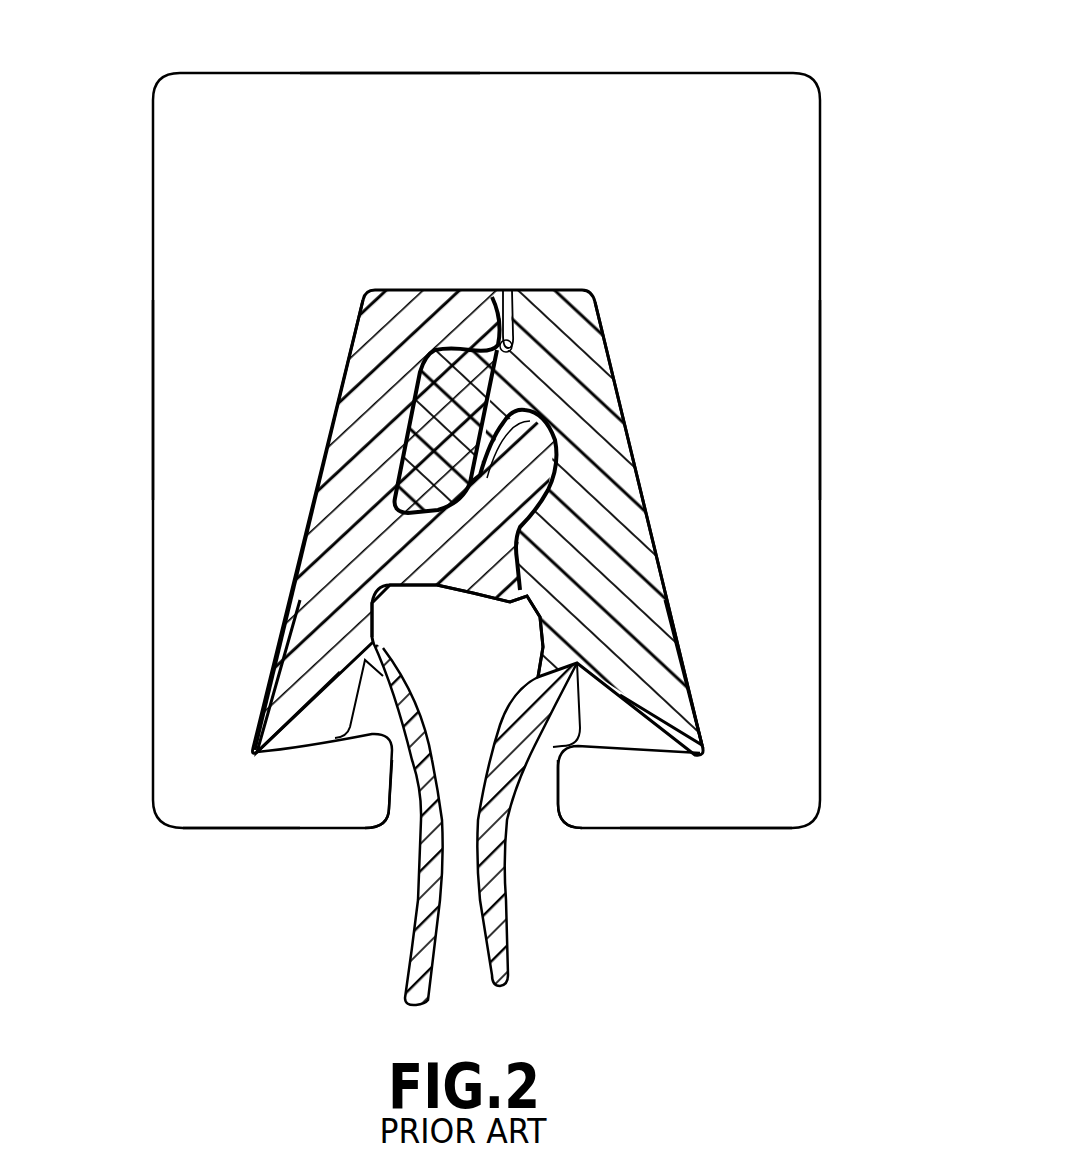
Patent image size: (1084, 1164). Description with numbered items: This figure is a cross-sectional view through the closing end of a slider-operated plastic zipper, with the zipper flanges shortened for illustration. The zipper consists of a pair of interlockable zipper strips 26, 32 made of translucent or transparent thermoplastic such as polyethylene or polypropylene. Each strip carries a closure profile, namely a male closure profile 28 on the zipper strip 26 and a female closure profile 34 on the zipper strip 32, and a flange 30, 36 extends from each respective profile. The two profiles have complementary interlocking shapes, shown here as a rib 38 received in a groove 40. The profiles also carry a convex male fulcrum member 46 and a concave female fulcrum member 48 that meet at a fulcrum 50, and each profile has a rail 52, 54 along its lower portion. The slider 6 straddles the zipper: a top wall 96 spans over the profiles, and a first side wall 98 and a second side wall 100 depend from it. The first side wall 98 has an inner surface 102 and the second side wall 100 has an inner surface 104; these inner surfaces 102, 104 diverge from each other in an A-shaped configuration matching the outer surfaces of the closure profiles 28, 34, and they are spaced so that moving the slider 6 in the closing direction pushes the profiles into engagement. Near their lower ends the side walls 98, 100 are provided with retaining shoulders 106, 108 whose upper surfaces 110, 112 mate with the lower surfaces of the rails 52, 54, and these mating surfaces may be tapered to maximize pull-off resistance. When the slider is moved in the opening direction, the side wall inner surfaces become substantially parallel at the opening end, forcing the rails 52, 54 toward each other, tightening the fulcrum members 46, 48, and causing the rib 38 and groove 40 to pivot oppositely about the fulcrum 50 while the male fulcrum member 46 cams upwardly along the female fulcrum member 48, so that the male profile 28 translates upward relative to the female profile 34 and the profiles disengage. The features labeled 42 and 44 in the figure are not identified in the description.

The slider 6 is at (737, 72).
The zipper strip 26 is at (618, 395).
The closure profile 28 is at (610, 420).
The flange 30 is at (503, 955).
The zipper strip 32 is at (325, 453).
The closure profile 34 is at (362, 395).
The flange 36 is at (414, 950).
The rib 38 is at (445, 397).
The groove 40 is at (385, 500).
The slot 42 is at (490, 297).
The slot end 44 is at (512, 343).
The convex male fulcrum member 46 is at (525, 525).
The concave female fulcrum member 48 is at (480, 572).
The fulcrum 50 is at (516, 590).
The rail 52 is at (680, 728).
The rail 54 is at (280, 730).
The top wall 96 is at (407, 88).
The first side wall 98 is at (790, 395).
The second side wall 100 is at (172, 392).
The inner surface 102 is at (640, 528).
The inner surface 104 is at (297, 560).
The retaining shoulder 106 is at (574, 800).
The retaining shoulder 108 is at (357, 810).
The upper surface 110 is at (690, 760).
The upper surface 112 is at (318, 748).